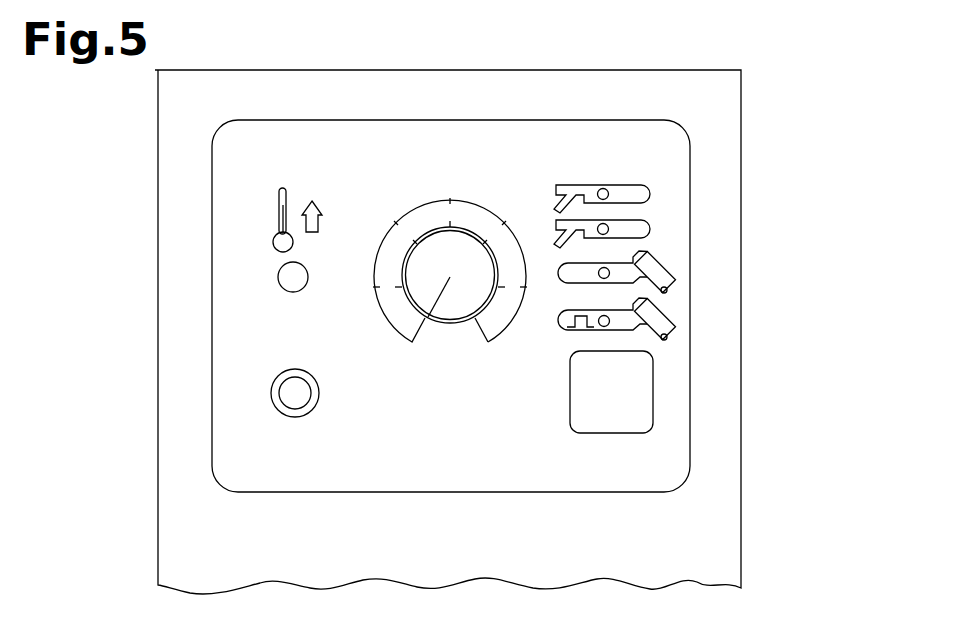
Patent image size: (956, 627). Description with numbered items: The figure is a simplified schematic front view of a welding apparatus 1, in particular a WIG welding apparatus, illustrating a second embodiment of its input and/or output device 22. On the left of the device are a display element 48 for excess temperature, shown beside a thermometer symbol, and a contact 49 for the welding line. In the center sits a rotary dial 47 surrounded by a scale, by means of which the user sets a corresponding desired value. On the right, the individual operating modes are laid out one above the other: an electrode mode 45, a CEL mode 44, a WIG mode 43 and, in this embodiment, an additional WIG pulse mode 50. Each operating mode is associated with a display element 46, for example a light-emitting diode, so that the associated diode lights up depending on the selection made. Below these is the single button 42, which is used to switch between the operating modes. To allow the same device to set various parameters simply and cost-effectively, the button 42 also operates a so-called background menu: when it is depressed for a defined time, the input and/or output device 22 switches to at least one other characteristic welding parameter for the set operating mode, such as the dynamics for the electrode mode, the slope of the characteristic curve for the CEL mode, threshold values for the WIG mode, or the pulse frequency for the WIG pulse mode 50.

The welding apparatus 1 is at (652, 90).
The input and/or output device 22 is at (757, 130).
The button 42 is at (640, 405).
The WIG mode 43 is at (686, 271).
The CEL mode 44 is at (678, 228).
The electrode mode 45 is at (678, 190).
The display elements 46 is at (603, 188).
The rotary dial 47 is at (462, 295).
The display element for excess temperature 48 is at (256, 283).
The contact 49 is at (248, 409).
The WIG pulse mode 50 is at (686, 325).